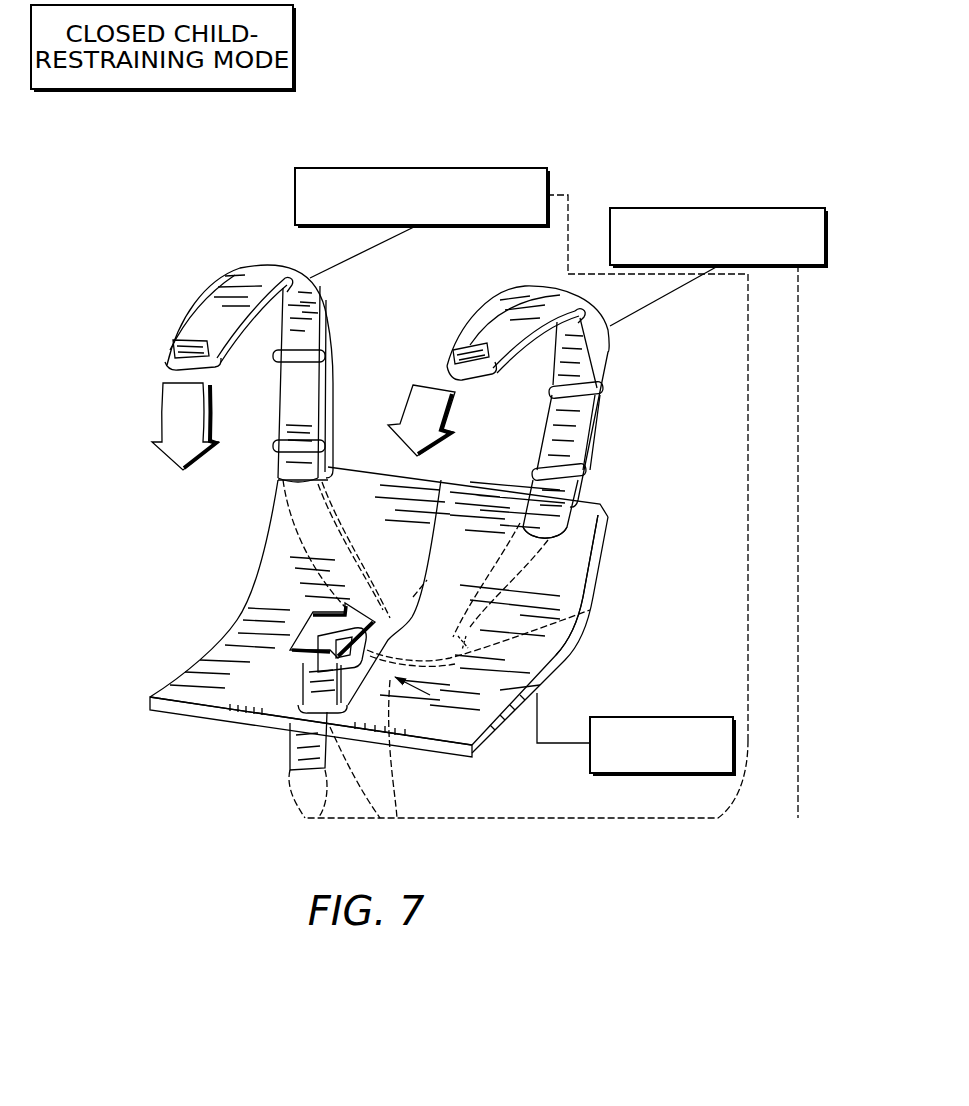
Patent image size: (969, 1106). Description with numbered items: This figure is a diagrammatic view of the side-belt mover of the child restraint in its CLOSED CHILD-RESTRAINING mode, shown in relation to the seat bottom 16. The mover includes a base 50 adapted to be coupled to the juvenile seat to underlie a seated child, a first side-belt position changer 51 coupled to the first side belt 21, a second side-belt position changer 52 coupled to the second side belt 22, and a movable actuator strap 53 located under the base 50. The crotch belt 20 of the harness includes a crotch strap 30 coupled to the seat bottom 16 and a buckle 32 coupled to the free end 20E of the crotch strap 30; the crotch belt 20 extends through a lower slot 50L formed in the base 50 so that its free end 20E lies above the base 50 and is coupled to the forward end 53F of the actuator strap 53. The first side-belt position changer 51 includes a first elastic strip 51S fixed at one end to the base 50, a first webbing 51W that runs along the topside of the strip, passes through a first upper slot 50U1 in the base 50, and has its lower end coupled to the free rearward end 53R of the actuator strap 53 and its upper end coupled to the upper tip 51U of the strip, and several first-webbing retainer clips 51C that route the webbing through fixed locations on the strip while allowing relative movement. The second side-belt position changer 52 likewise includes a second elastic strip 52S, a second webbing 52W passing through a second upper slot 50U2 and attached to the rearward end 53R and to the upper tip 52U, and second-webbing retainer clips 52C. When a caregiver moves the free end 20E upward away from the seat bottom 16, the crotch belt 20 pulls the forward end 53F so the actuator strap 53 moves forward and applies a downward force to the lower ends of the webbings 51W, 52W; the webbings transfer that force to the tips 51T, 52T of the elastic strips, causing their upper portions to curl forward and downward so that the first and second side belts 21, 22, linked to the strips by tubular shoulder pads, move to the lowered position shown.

The seat bottom 16 is at (658, 773).
The crotch belt 20 is at (231, 676).
The free end 20E is at (386, 632).
The first side belt 21 is at (718, 207).
The second side belt 22 is at (420, 167).
The crotch strap 30 is at (295, 725).
The buckle 32 is at (307, 657).
The base 50 is at (423, 642).
The first upper shell portion 50U1 is at (548, 531).
The second upper shell portion 50U2 is at (300, 483).
The lower shell portion 50L is at (292, 700).
The first side-belt position changer 51 is at (580, 386).
The upper tip of first elastic strip 51U is at (614, 323).
The first elastic strip 51S is at (614, 352).
The first-webbing retainer clips 51C is at (608, 403).
The first webbing 51W is at (568, 448).
The first belt tab 51T is at (465, 380).
The second side-belt position changer 52 is at (247, 304).
The upper tip of second elastic strip 52U is at (258, 258).
The second elastic strip 52S is at (213, 309).
The second-webbing retainer clips 52C is at (330, 355).
The second webbing 52W is at (320, 407).
The second belt tab 52T is at (190, 368).
The movable actuator strap 53 is at (488, 745).
The free rearward end of movable actuator strap 53R is at (588, 615).
The forward end of movable actuator strap 53F is at (390, 748).